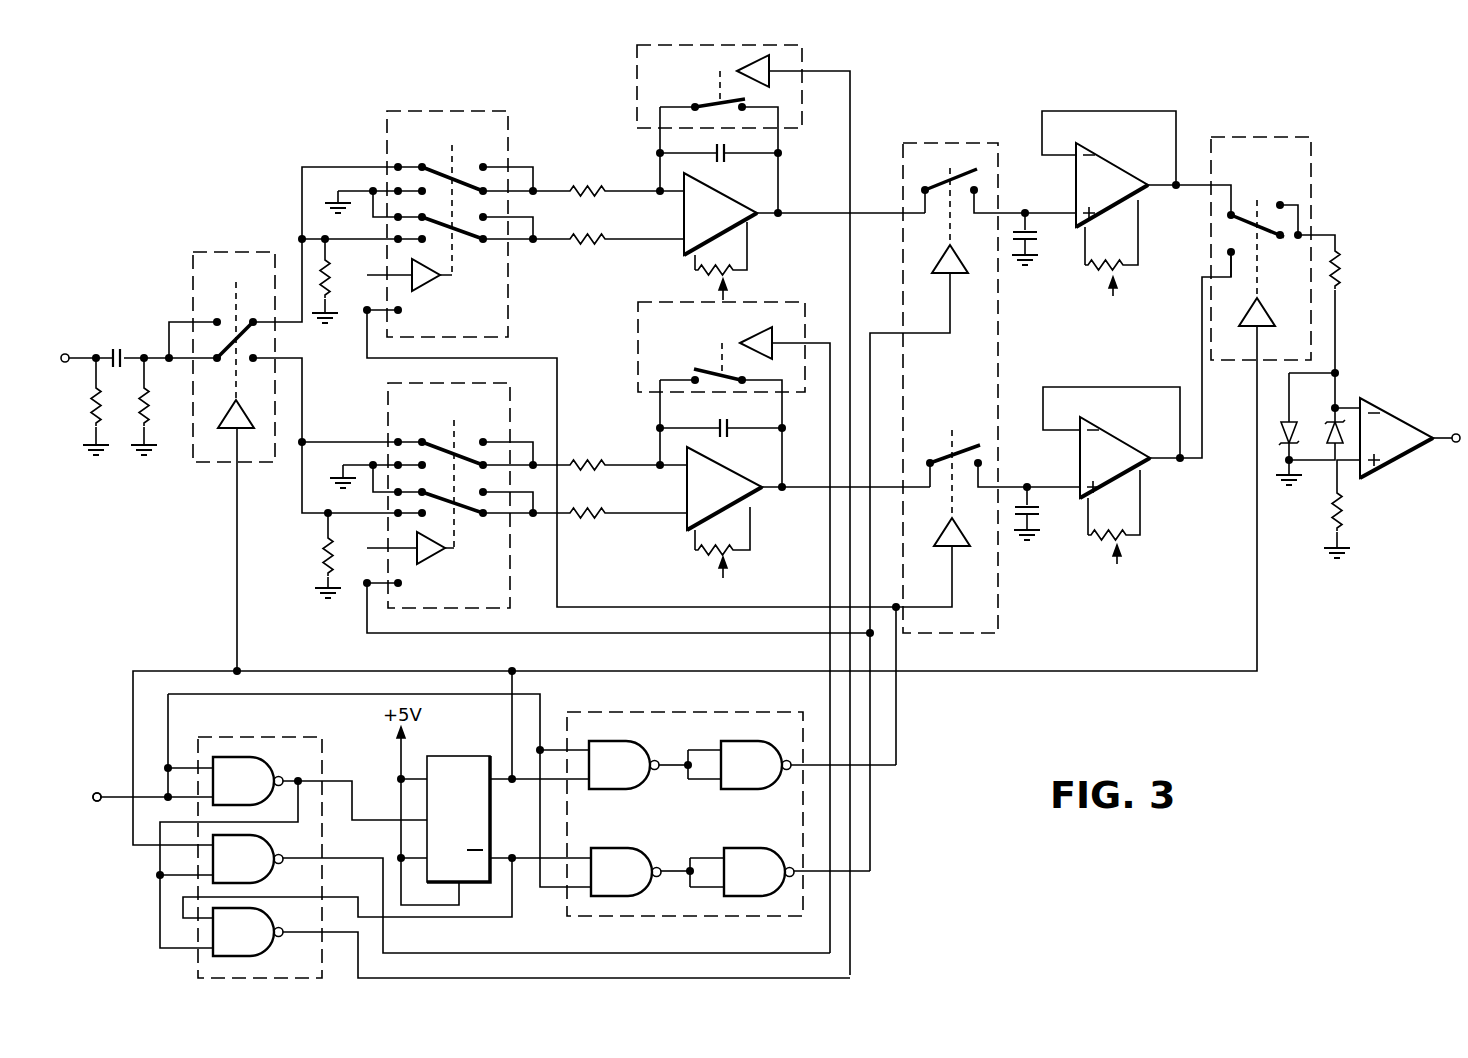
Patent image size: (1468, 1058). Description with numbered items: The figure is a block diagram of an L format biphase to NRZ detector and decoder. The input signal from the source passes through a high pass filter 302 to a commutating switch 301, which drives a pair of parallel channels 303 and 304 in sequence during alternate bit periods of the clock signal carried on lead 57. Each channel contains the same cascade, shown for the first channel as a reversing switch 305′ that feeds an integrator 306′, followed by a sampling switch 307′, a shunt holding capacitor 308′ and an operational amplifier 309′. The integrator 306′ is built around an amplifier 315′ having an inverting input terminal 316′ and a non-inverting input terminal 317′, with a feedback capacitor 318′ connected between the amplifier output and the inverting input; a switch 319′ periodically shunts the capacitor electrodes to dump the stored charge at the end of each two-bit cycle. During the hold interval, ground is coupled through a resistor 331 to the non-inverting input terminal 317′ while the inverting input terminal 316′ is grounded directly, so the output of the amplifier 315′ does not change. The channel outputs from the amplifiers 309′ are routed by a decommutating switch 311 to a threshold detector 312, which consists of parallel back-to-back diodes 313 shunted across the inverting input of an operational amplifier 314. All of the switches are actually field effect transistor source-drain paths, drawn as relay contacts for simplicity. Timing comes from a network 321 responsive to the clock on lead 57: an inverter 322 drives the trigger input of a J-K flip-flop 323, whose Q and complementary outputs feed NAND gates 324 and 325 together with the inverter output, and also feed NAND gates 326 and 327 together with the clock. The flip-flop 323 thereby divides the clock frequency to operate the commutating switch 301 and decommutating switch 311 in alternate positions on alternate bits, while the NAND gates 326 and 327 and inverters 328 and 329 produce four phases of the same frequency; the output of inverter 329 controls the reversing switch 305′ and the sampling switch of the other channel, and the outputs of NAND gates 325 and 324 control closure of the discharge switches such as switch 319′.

The lead 57 is at (116, 810).
The commutating switch 301 is at (205, 250).
The high pass filter 302 is at (121, 349).
The channel 303 is at (548, 103).
The channel 304 is at (626, 423).
The reversing switch 305′ is at (387, 121).
The integrator 306′ is at (696, 215).
The sampling switch 307′ is at (961, 167).
The shunt holding capacitor 308′ is at (1036, 243).
The operational amplifier 309′ is at (1118, 161).
The decommutating switch 311 is at (1290, 137).
The threshold detector 312 is at (1377, 480).
The back-to-back diodes 313 is at (1333, 427).
The operational amplifier 314 is at (1392, 471).
The amplifier 315′ is at (748, 228).
The inverting input terminal 316′ is at (660, 196).
The non-inverting input terminal 317′ is at (684, 241).
The feedback capacitor 318′ is at (728, 159).
The switch 319′ is at (698, 102).
The timing network 321 is at (636, 706).
The inverter 322 is at (263, 768).
The J-K flip-flop 323 is at (475, 757).
The NAND gate 324 is at (273, 882).
The NAND gate 325 is at (273, 953).
The NAND gate 326 is at (623, 739).
The NAND gate 327 is at (646, 831).
The inverter 328 is at (757, 740).
The inverter 329 is at (757, 831).
The resistor 331 is at (331, 278).